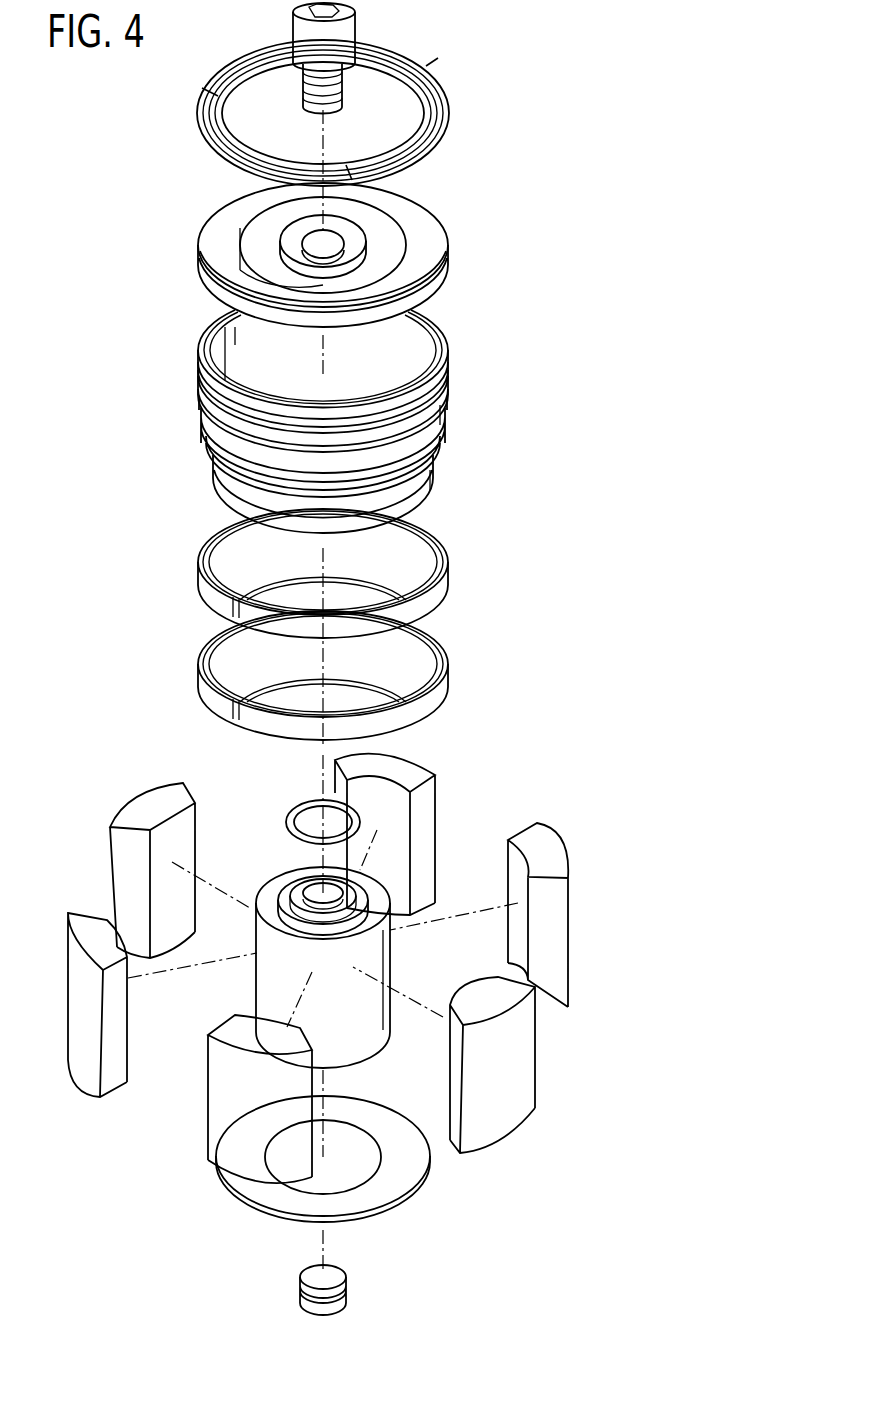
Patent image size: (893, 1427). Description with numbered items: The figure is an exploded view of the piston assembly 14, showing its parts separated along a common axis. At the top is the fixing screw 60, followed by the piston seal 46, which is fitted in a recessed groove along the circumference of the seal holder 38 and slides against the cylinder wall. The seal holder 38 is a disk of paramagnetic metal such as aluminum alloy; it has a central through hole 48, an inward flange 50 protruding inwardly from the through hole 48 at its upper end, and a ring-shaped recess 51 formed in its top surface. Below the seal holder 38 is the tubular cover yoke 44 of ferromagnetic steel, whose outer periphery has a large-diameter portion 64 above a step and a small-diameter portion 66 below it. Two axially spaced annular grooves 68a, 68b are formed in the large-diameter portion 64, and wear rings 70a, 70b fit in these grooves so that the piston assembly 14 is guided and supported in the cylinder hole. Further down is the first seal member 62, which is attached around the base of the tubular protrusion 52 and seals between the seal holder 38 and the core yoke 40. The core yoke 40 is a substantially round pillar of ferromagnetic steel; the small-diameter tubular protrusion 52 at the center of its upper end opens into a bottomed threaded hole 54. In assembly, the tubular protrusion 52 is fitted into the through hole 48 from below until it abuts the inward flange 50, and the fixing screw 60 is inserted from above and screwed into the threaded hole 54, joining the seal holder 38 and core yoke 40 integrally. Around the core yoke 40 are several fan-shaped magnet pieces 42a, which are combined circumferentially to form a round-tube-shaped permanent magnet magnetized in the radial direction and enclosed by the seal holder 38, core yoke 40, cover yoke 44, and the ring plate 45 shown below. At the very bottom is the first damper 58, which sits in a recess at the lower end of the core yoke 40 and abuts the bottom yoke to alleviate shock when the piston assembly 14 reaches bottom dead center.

The piston assembly 14 is at (557, 45).
The fixing screw 60 is at (354, 30).
The piston seal 46 is at (440, 91).
The seal holder 38 is at (346, 246).
The through hole 48 is at (341, 241).
The inward flange 50 is at (293, 240).
The ring-shaped recess 51 is at (377, 266).
The cover yoke 44 is at (323, 421).
The large-diameter portion 64 is at (200, 400).
The annular groove 68a is at (255, 423).
The annular groove 68b is at (252, 467).
The small-diameter portion 66 is at (418, 493).
The wear ring 70a is at (448, 562).
The wear ring 70b is at (448, 662).
The first seal member 62 is at (297, 801).
The threaded hole 54 is at (302, 921).
The tubular protrusion 52 is at (328, 917).
The core yoke 40 is at (372, 962).
The fan-shaped magnet pieces 42a is at (513, 1115).
The ring plate 45 is at (400, 1175).
The first damper 58 is at (332, 1273).